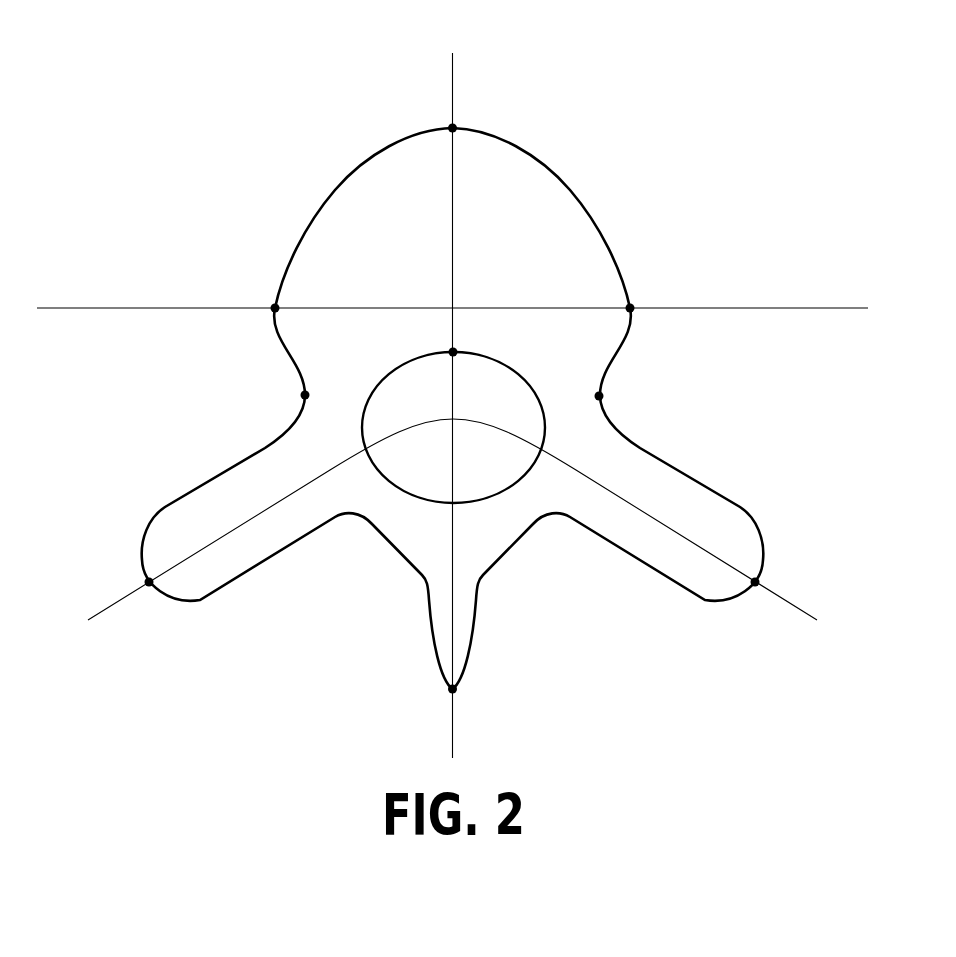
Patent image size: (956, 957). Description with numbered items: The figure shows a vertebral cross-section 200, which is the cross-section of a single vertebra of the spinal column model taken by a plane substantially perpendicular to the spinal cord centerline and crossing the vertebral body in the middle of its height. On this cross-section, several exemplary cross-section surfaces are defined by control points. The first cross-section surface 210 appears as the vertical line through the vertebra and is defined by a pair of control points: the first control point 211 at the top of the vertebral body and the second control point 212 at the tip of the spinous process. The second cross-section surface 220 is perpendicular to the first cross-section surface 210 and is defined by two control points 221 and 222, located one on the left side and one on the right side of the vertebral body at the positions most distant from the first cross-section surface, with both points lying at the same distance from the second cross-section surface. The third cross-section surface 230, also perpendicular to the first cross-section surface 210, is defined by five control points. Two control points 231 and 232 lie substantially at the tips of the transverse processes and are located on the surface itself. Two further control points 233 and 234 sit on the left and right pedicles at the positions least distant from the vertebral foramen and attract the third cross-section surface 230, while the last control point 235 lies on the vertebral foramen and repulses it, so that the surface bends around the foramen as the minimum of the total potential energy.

The vertebral cross-section 200 is at (357, 160).
The first cross-section surface 210 is at (456, 71).
The first control point 211 is at (450, 125).
The second control point 212 is at (457, 695).
The second cross-section surface 220 is at (758, 306).
The first control point 221 is at (270, 303).
The second control point 222 is at (635, 303).
The third cross-section surface 230 is at (793, 607).
The control point 231 is at (143, 580).
The control point 232 is at (761, 580).
The control point 233 is at (300, 395).
The control point 234 is at (604, 396).
The control point 235 is at (458, 352).